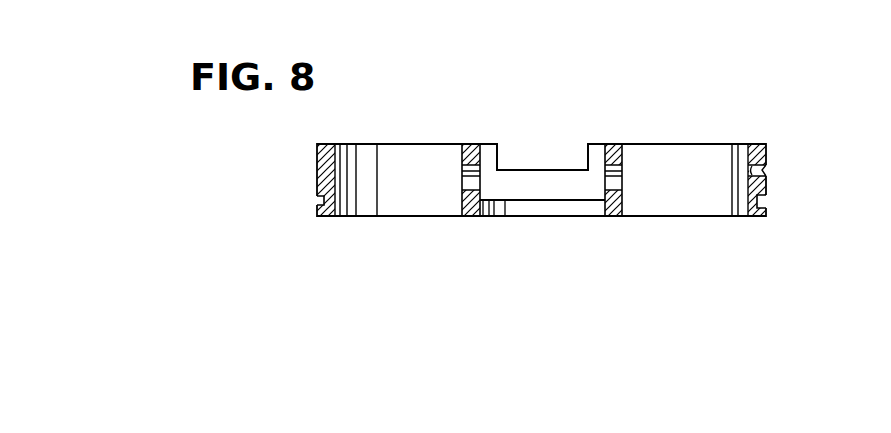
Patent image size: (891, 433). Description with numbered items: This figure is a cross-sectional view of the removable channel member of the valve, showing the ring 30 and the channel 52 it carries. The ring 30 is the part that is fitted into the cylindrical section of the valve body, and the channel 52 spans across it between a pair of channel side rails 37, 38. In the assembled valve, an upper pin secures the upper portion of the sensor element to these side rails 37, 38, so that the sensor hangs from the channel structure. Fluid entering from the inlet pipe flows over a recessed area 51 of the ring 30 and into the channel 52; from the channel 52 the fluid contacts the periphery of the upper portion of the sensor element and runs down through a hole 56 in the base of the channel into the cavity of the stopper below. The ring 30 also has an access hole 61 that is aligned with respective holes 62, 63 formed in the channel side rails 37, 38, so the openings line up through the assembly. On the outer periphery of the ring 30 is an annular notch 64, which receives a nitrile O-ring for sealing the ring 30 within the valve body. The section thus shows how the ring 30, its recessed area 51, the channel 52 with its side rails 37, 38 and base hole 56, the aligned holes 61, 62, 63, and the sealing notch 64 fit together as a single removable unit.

The ring 30 is at (757, 145).
The side rail 37 is at (466, 152).
The side rail 38 is at (615, 152).
The recessed area 51 is at (566, 168).
The channel 52 is at (523, 170).
The hole 56 is at (552, 207).
The access hole 61 is at (760, 178).
The hole 62 is at (612, 182).
The hole 63 is at (472, 182).
The annular notch 64 is at (320, 201).